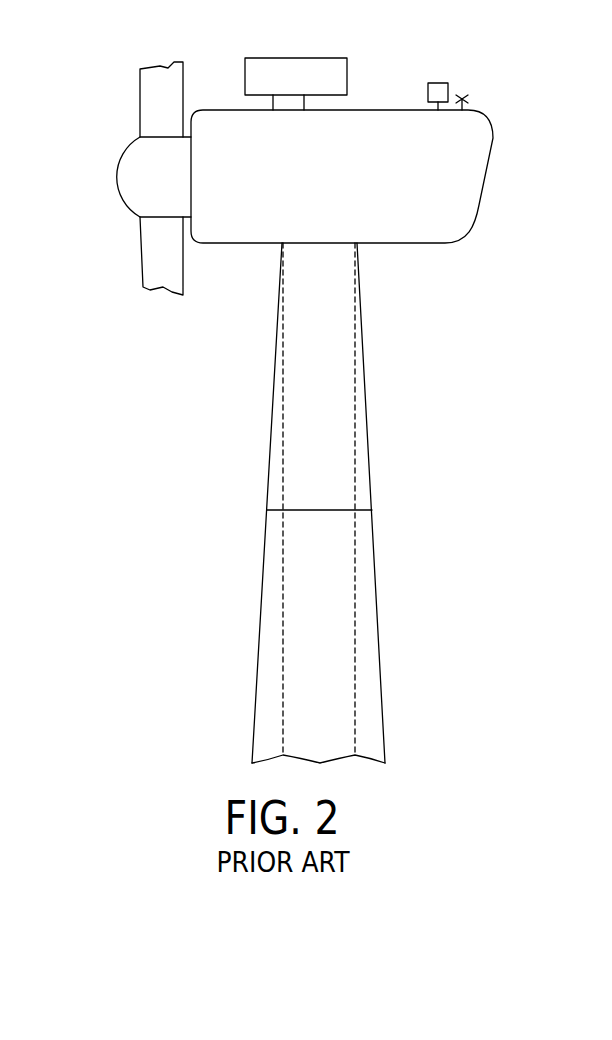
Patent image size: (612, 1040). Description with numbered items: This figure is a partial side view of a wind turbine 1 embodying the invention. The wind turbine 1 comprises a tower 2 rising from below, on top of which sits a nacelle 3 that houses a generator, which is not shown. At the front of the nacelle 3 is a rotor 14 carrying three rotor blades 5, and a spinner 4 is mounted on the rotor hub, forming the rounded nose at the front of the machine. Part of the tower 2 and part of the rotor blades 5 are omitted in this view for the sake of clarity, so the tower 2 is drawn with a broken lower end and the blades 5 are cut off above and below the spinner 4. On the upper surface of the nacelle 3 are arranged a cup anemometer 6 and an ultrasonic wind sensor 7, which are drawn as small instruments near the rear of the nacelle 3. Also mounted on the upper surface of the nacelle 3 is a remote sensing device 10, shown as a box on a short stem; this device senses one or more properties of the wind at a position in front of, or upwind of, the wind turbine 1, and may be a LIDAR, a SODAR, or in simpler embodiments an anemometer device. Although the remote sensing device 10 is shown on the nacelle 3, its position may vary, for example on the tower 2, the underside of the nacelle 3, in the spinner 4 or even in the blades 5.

The wind turbine 1 is at (296, 385).
The tower 2 is at (270, 600).
The nacelle 3 is at (385, 120).
The spinner 4 is at (128, 178).
The rotor blades 5 is at (142, 103).
The cup anemometer 6 is at (468, 98).
The ultrasonic wind sensor 7 is at (438, 82).
The remote sensing device 10 is at (323, 57).
The rotor 14 is at (106, 145).